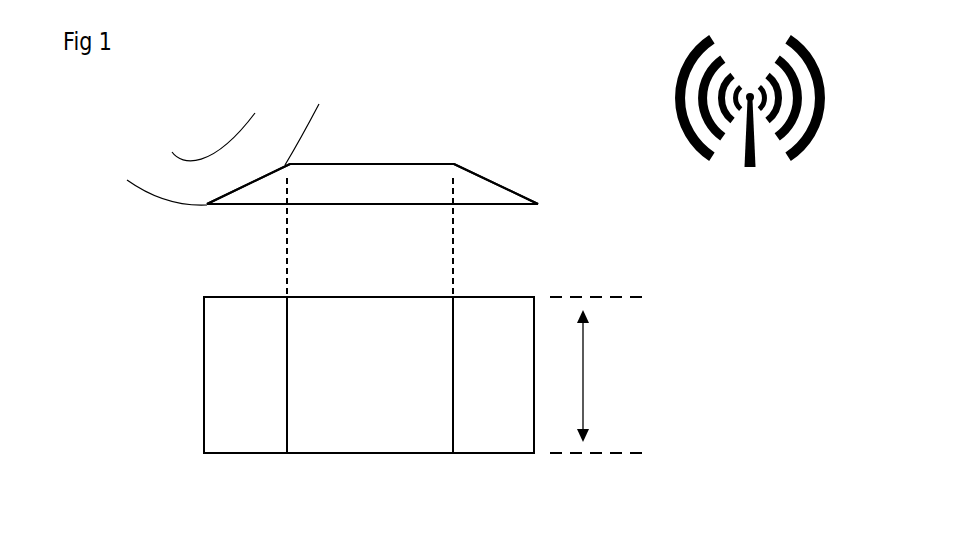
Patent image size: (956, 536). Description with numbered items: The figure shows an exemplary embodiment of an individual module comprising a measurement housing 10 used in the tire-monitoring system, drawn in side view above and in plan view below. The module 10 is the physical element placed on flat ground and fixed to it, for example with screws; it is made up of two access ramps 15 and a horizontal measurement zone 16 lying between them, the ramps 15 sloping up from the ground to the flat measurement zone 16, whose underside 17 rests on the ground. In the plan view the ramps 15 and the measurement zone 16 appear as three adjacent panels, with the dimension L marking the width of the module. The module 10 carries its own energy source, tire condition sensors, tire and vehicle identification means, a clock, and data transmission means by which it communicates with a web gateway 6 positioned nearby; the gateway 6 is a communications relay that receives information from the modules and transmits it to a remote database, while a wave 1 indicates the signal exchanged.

The radio wave / signal 1 is at (127, 181).
The web gateway 6 is at (742, 155).
The measurement housing 10 is at (413, 177).
The access ramps 15 is at (245, 184).
The horizontal measurement zone 16 is at (368, 163).
The bottom surface 17 is at (343, 205).
The length L is at (596, 375).